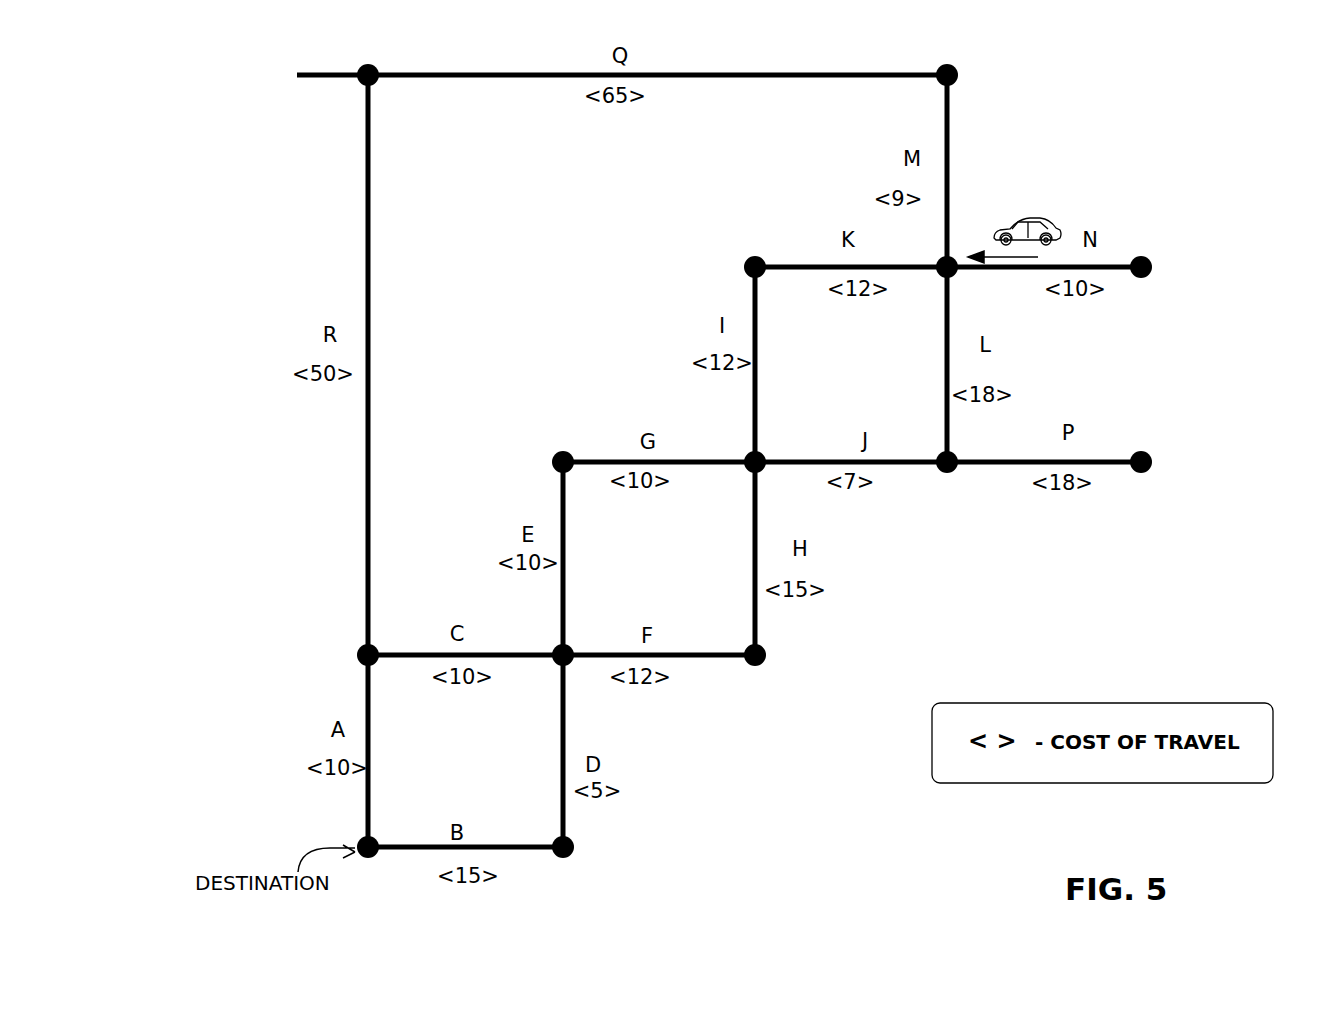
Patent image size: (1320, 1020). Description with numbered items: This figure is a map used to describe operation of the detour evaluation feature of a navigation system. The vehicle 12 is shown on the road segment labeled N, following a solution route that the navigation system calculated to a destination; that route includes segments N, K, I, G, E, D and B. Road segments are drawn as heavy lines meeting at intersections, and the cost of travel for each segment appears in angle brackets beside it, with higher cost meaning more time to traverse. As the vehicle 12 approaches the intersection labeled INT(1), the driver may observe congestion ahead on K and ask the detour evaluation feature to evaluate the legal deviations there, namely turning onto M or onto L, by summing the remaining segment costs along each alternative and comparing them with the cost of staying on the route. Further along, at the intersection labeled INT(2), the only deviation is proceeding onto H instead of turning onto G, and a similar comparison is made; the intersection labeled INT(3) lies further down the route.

The vehicle 12 is at (1047, 193).
The intersection INT 1 is at (966, 291).
The intersection INT 2 is at (767, 484).
The intersection INT 3 is at (576, 679).